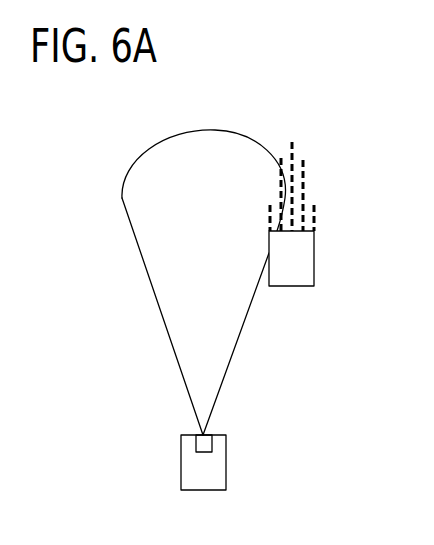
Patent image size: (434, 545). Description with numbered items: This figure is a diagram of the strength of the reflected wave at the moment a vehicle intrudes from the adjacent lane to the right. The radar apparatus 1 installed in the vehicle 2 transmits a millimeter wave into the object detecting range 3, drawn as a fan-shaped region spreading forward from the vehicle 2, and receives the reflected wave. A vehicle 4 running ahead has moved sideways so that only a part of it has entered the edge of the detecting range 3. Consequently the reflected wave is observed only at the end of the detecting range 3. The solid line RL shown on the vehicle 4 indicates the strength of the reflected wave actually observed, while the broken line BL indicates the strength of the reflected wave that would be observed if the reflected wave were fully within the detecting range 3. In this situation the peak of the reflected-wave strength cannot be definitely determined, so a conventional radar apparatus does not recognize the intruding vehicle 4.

The radar apparatus 1 is at (198, 435).
The vehicle 2 is at (226, 462).
The object detecting range 3 is at (160, 323).
The vehicle running ahead 4 is at (314, 255).
The solid line RL is at (252, 215).
The broken line BL is at (311, 148).